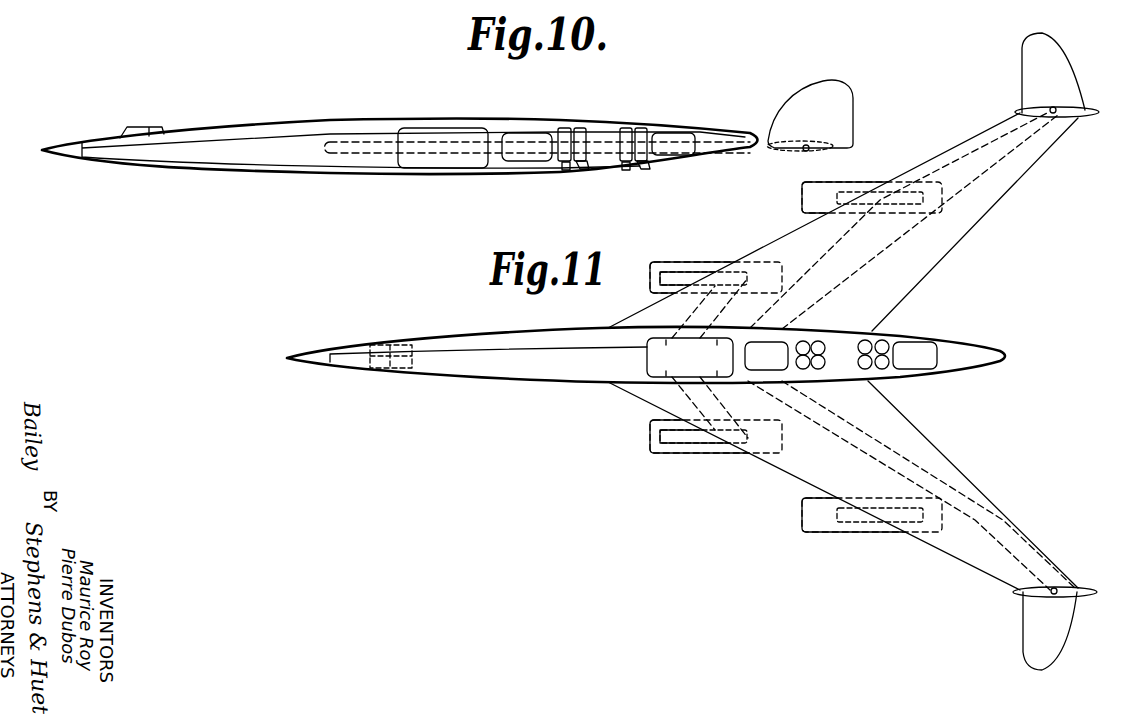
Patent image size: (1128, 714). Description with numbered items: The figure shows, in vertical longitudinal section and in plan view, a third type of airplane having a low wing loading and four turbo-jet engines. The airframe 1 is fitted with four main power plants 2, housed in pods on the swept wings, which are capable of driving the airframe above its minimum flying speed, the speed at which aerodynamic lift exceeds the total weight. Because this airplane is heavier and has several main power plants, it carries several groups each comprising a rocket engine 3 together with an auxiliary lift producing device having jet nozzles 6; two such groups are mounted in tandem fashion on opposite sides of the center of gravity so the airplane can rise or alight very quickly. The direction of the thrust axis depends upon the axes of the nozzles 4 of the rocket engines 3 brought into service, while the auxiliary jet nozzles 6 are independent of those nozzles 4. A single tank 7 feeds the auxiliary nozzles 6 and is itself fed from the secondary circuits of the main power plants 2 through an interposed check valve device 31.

In FIG. 10, the airframe 1 is at (252, 122).
In FIG. 11, the airframe 1 is at (515, 378).
In FIG. 11, the main power plant 2 is at (812, 190).
In FIG. 10, the rocket engine 3 is at (578, 131).
In FIG. 11, the rocket engine 3 is at (824, 360).
In FIG. 10, the nozzle of rocket engine 4 is at (585, 169).
In FIG. 10, the auxiliary jet nozzle 6 is at (565, 170).
In FIG. 10, the tank 7 is at (443, 160).
In FIG. 11, the tank 7 is at (660, 358).
In FIG. 11, the check valve device 31 is at (691, 358).